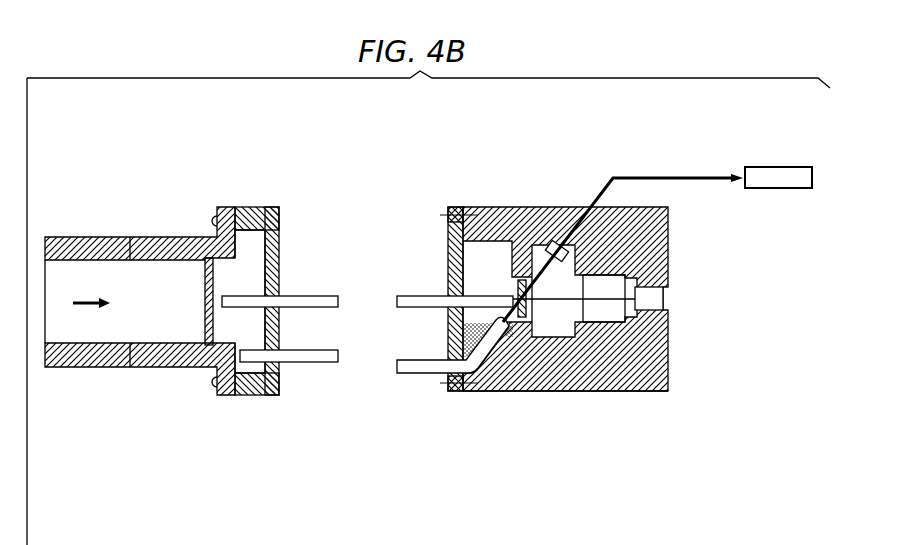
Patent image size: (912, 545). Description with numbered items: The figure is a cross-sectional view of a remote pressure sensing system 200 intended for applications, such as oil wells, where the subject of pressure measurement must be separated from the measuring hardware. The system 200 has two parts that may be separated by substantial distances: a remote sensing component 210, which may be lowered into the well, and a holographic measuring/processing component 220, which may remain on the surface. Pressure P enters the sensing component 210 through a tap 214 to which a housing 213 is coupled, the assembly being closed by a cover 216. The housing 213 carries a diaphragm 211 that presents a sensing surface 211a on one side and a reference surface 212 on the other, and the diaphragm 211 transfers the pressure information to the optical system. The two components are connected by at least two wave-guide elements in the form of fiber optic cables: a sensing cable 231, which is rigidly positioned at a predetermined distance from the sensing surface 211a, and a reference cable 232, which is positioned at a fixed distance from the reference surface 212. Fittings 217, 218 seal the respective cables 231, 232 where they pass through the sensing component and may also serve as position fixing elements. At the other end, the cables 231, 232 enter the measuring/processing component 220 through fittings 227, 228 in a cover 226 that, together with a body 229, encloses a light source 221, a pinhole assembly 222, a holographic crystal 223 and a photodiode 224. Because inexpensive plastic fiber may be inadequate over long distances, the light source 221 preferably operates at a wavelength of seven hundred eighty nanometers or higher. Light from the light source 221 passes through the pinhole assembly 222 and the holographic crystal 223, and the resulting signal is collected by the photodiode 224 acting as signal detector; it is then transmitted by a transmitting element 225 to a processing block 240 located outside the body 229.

The remote pressure sensing system 200 is at (410, 143).
The remote sensing component 210 is at (205, 452).
The diaphragm 211 is at (205, 288).
The sensing surface 211a is at (215, 277).
The reference surface 212 is at (279, 325).
The housing 213 is at (192, 343).
The tap 214 is at (85, 237).
The cover 216 is at (256, 207).
The fitting 217 is at (278, 296).
The fitting 218 is at (266, 395).
The holographic measuring/processing component 220 is at (550, 450).
The light source 221 is at (668, 292).
The pinhole assembly 222 is at (668, 240).
The holographic crystal 223 is at (519, 280).
The photodiode 224 is at (560, 240).
The transmitting element 225 is at (685, 178).
The cover 226 is at (465, 337).
The fitting 227 is at (448, 290).
The fitting 228 is at (452, 392).
The body 229 is at (620, 392).
The sensing cable 231 is at (405, 297).
The reference cable 232 is at (420, 367).
The processing block 240 is at (775, 167).
The pressure P is at (91, 294).